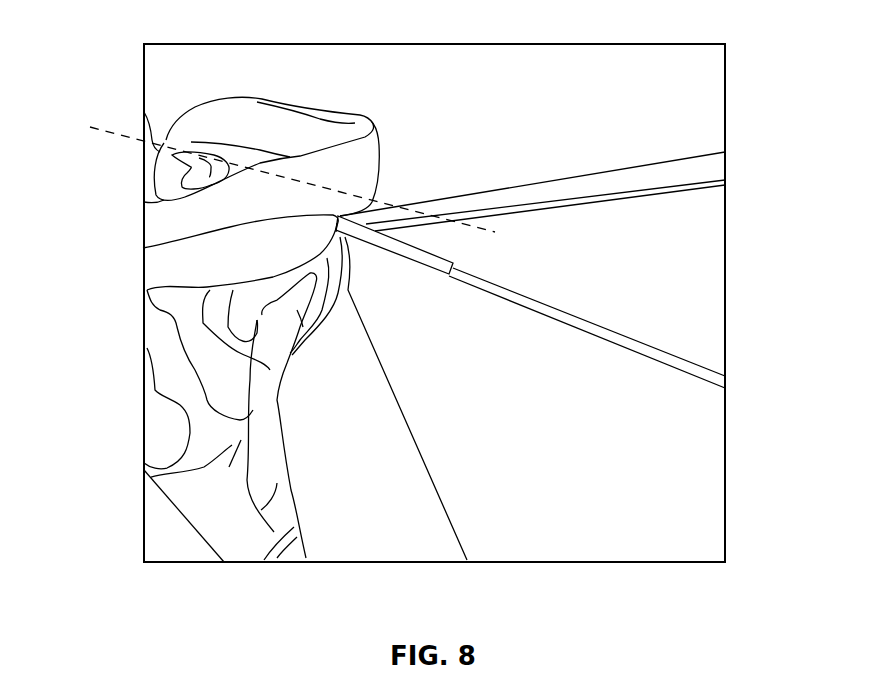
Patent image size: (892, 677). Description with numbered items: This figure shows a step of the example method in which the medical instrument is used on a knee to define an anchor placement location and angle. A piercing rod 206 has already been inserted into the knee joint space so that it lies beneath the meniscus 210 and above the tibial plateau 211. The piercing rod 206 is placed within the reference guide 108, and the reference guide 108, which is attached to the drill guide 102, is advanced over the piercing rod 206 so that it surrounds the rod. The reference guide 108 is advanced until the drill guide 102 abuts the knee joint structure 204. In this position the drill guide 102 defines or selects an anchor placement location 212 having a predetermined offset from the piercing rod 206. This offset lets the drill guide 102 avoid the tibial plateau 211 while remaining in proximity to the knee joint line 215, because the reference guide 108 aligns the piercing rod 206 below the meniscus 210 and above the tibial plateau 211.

The drill guide 102 is at (708, 173).
The reference guide 108 is at (446, 259).
The piercing rod 206 is at (693, 368).
The meniscus 210 is at (362, 155).
The tibial plateau 211 is at (165, 168).
The anchor placement location 212 is at (143, 248).
The knee joint structure 204 is at (266, 308).
The knee joint line 215 is at (165, 140).